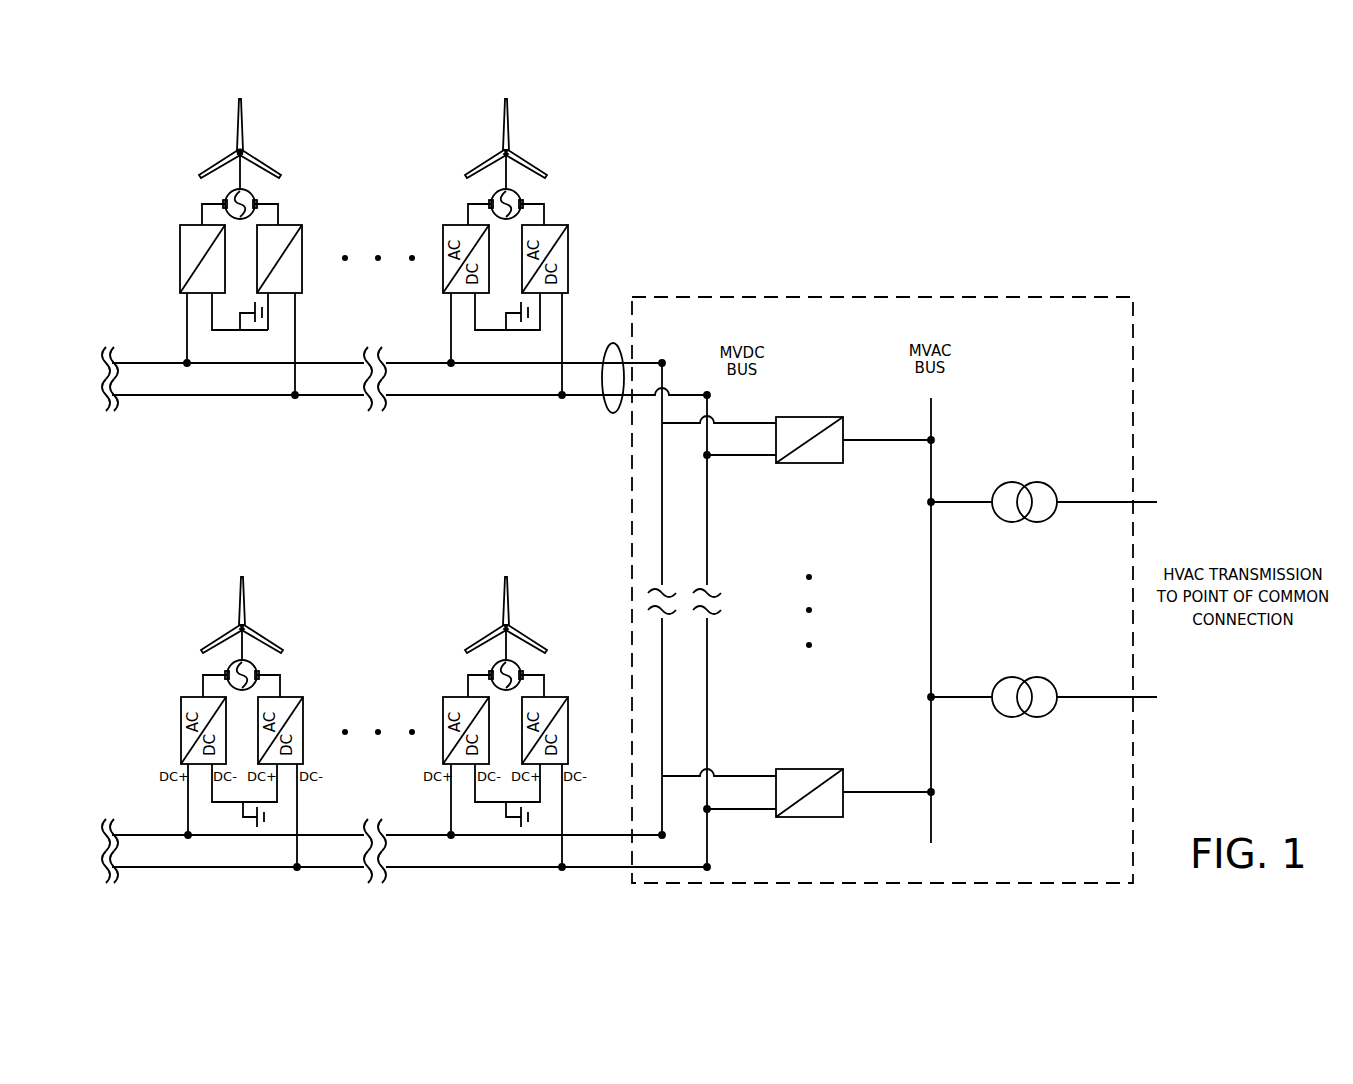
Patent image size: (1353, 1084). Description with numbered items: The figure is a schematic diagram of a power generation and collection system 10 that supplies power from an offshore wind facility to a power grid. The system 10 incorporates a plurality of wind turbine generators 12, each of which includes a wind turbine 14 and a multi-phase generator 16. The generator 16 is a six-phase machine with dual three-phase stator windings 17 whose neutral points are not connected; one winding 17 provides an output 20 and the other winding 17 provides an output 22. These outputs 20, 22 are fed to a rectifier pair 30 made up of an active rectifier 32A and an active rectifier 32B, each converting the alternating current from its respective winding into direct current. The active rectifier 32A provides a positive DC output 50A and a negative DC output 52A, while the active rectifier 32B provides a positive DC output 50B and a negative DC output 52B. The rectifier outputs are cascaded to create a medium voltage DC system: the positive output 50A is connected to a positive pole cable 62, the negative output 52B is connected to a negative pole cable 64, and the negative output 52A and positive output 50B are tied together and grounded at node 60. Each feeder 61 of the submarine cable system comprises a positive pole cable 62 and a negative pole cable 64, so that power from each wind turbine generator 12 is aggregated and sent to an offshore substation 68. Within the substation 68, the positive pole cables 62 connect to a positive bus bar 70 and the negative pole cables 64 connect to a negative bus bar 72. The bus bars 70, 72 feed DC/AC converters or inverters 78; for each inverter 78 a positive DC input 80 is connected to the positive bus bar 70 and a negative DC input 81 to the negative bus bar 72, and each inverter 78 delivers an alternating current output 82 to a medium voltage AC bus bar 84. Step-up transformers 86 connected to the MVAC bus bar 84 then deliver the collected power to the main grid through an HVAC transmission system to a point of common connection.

The power generation and collection system 10 is at (1082, 251).
The wind turbine generator 12 is at (295, 115).
The wind turbine 14 is at (248, 151).
The multi-phase generator 16 is at (257, 200).
The three-phase stator winding 17 is at (225, 204).
The output 20 is at (200, 205).
The output 22 is at (280, 216).
The rectifier pair 30 is at (245, 270).
The active rectifier 32A is at (182, 300).
The active rectifier 32B is at (302, 242).
The positive DC output 50A is at (185, 342).
The positive DC output 50B is at (270, 318).
The negative DC output 52A is at (210, 325).
The negative DC output 52B is at (297, 312).
The node 60 is at (242, 320).
The feeder 61 is at (628, 352).
The positive pole cable 62 is at (613, 343).
The negative pole cable 64 is at (497, 400).
The offshore substation 68 is at (857, 281).
The positive bus bar 70 is at (664, 362).
The negative bus bar 72 is at (710, 500).
The DC/AC converter 78 is at (824, 417).
The positive DC input 80 is at (757, 422).
The negative DC input 81 is at (750, 456).
The alternating current output 82 is at (872, 440).
The MVAC bus bar 84 is at (931, 470).
The step-up transformer 86 is at (1040, 467).